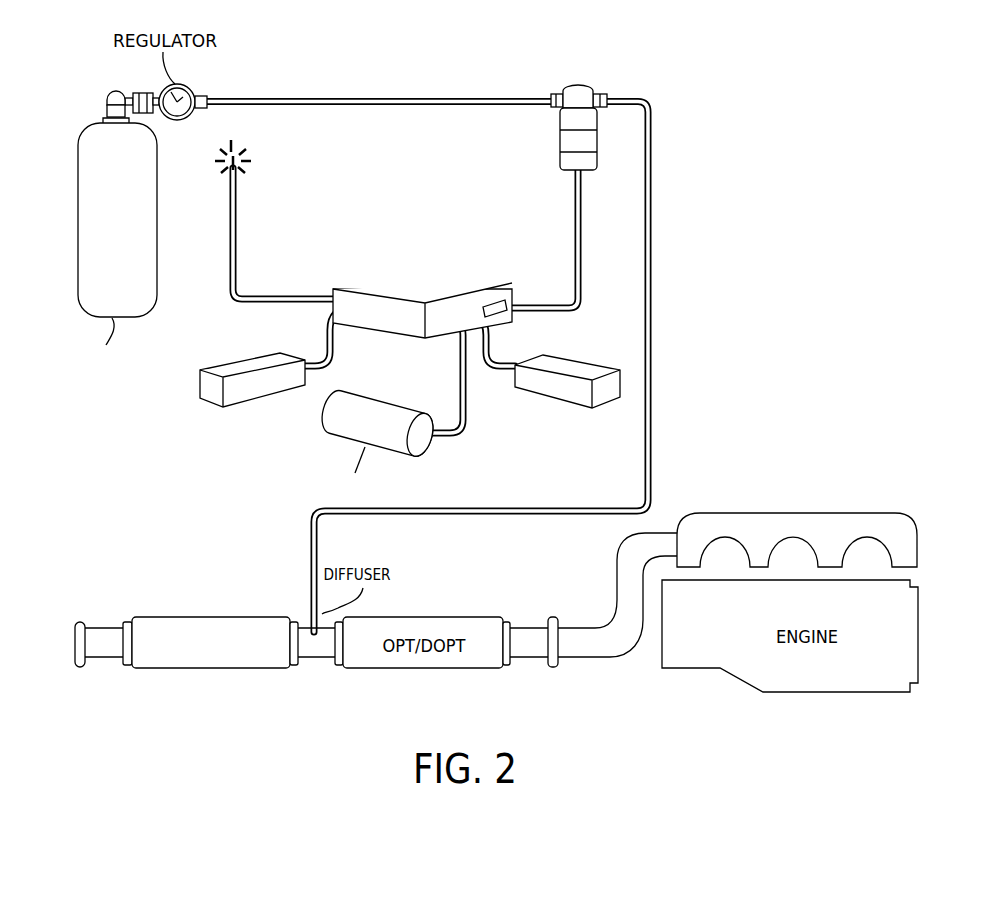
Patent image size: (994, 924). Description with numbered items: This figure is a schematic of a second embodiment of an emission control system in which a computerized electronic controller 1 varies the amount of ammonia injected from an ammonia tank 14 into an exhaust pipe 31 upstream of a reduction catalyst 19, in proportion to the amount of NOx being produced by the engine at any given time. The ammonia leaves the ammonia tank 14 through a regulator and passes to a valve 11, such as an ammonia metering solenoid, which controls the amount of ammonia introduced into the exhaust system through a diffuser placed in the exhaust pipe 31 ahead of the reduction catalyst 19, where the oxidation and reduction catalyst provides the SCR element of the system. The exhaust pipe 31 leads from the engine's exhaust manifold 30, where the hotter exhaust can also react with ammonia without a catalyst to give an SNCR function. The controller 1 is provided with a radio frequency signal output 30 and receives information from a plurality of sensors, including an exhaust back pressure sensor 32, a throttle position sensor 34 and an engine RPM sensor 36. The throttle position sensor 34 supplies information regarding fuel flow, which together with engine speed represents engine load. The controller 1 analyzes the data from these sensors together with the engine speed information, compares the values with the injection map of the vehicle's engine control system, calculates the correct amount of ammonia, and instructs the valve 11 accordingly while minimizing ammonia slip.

The controller 1 is at (421, 288).
The valve 11 is at (577, 84).
The ammonia tank 14 is at (130, 233).
The reduction catalyst 19 is at (150, 614).
The radio frequency (RF) signal output 30 is at (287, 183).
The exhaust pipe 31 is at (587, 658).
The exhaust back pressure sensor 32 is at (213, 405).
The throttle position sensor 34 is at (365, 447).
The engine RPM sensor 36 is at (558, 398).